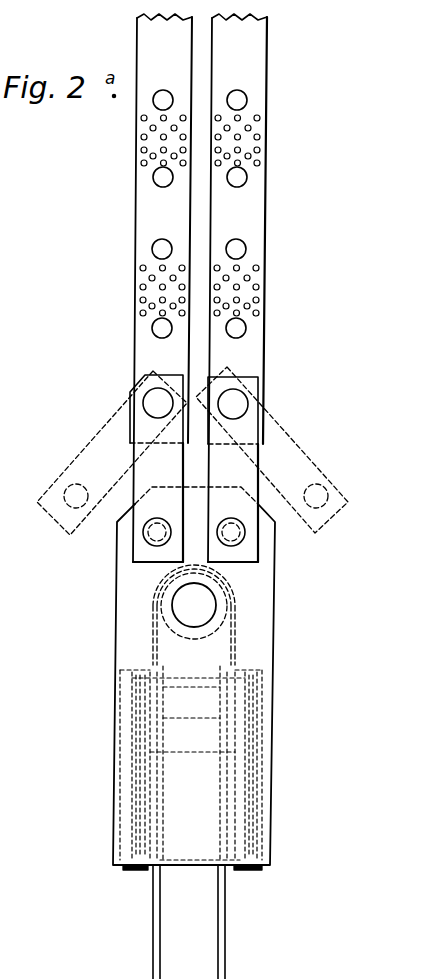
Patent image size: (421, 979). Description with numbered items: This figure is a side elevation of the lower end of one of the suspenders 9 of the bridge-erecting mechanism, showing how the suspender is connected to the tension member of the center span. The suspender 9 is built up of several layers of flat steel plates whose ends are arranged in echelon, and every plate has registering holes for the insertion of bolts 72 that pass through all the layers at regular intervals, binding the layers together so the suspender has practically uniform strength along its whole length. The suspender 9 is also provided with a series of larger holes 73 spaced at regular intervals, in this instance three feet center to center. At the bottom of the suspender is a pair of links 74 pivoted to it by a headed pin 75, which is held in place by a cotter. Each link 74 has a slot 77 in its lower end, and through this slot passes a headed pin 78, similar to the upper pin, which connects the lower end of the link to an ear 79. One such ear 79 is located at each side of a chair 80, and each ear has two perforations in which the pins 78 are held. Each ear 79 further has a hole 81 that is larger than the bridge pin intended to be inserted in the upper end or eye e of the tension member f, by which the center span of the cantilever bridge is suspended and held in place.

The suspender 9 is at (135, 328).
The bolts 72 is at (260, 119).
The holes 73 is at (247, 102).
The links 74 is at (145, 464).
The headed pin 75 is at (145, 400).
The slot 77 is at (65, 493).
The headed pin 78 is at (144, 541).
The ear 79 is at (128, 620).
The chair 80 is at (262, 782).
The hole 81 is at (216, 597).
The eye e is at (230, 617).
The tension member f is at (218, 961).